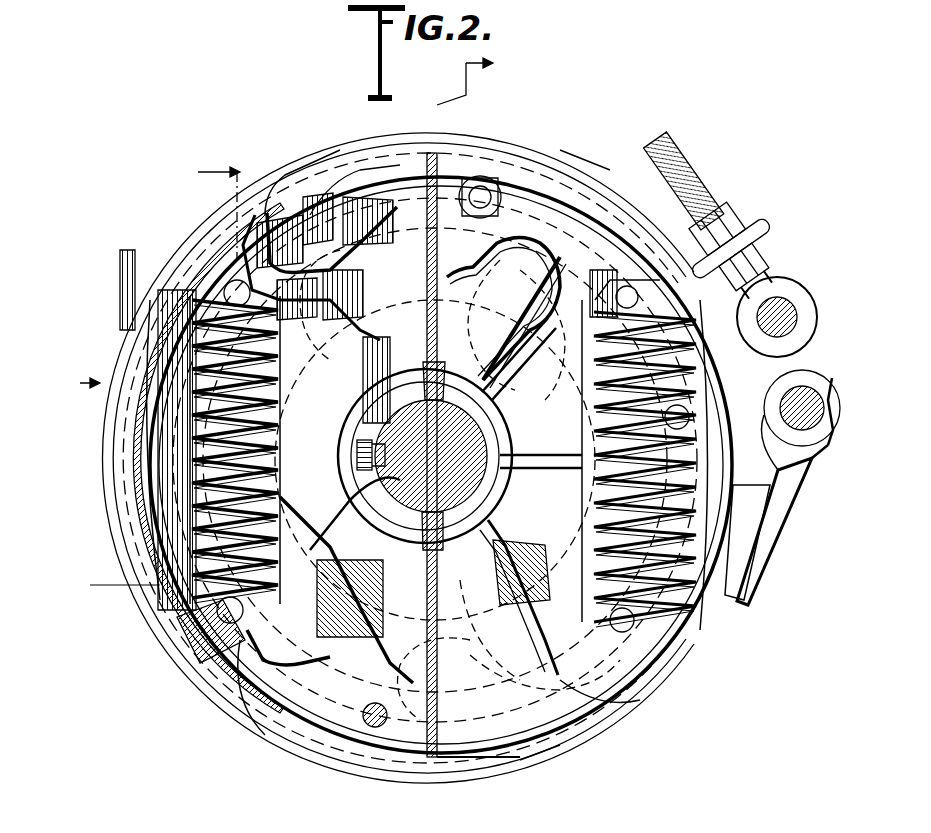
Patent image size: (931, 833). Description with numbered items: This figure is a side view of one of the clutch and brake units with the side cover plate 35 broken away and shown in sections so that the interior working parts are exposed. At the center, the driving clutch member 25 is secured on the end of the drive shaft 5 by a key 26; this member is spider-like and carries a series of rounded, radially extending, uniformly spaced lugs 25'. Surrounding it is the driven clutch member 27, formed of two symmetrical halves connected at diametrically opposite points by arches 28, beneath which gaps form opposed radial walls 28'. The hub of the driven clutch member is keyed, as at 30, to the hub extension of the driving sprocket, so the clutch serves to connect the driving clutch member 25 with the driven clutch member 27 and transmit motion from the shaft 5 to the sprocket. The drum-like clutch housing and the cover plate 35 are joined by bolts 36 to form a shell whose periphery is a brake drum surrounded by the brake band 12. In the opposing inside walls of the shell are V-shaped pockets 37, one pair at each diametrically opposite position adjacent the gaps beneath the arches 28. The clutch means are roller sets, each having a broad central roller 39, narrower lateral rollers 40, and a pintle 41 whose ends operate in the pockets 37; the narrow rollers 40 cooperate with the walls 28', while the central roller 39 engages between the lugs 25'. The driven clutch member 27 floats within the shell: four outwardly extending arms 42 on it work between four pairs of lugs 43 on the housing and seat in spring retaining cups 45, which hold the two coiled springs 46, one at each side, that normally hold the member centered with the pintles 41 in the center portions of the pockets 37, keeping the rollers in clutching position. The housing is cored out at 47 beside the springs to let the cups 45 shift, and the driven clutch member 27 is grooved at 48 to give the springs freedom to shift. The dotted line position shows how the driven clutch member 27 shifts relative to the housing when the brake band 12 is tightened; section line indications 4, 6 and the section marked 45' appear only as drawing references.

The section line 4- 4 is at (465, 74).
The drive shaft 5 is at (110, 575).
The section line 6- 6 is at (149, 275).
The brake band 12 is at (516, 172).
The driving clutch member 25 is at (158, 450).
The lugs 25' is at (442, 432).
The key 26 is at (130, 476).
The driven clutch member 27 is at (190, 280).
The arches 28 is at (404, 440).
The opposed radial walls 28' is at (377, 441).
The key 30 is at (705, 208).
The cover plate 35 is at (655, 690).
The bolts 36 is at (480, 176).
The V-shaped pockets 37 is at (272, 212).
The central roller 39 is at (305, 192).
The narrower rollers 40 is at (392, 175).
The pintle 41 is at (418, 160).
The outwardly extending arms 42 is at (336, 100).
The lugs 43 is at (245, 205).
The spring retaining cups 45 is at (167, 445).
The spring seat 45' is at (168, 621).
The coiled springs 46 is at (150, 368).
The cored-out portions 47 is at (150, 516).
The grooves 48 is at (135, 428).